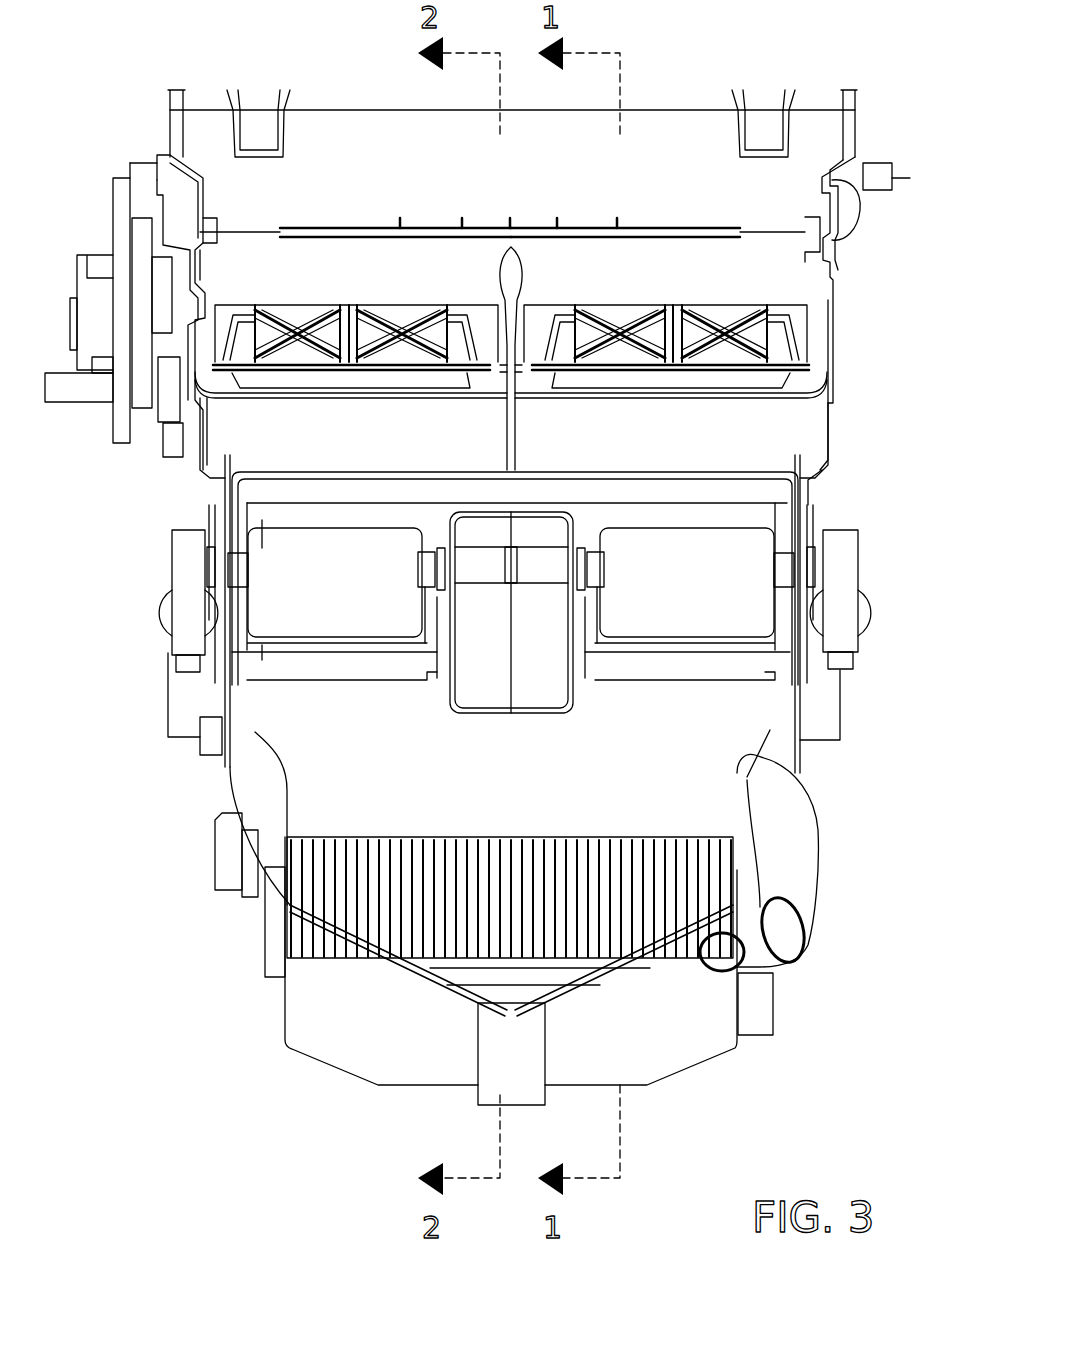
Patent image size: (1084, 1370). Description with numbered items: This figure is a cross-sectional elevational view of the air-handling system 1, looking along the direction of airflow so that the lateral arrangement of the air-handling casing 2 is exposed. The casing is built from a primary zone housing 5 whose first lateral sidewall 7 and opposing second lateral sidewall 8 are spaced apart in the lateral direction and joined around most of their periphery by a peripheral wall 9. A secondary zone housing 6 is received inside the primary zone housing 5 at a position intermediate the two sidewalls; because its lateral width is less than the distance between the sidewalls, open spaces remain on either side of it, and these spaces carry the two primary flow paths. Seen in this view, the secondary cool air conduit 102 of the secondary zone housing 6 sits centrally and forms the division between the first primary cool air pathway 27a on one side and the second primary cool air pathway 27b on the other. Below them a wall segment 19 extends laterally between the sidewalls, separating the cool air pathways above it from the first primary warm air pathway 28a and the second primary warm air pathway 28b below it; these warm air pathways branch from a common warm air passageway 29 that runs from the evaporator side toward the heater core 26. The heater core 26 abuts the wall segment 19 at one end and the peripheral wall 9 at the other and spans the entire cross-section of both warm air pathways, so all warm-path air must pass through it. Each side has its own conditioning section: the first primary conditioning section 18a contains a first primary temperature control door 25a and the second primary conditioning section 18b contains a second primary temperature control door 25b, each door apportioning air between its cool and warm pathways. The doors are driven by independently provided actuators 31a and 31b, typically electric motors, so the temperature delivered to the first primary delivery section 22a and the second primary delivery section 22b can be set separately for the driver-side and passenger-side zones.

The air-handling system 1 is at (118, 42).
The air-handling casing 2 is at (700, 100).
The primary zone housing 5 is at (835, 298).
The secondary zone housing 6 is at (540, 512).
The first lateral sidewall 7 is at (800, 528).
The second lateral sidewall 8 is at (228, 527).
The peripheral wall 9 is at (428, 1087).
The wall segment 19 is at (713, 755).
The first primary delivery section 22a is at (740, 268).
The second primary delivery section 22b is at (232, 300).
The first primary temperature control door 25a is at (707, 642).
The second primary temperature control door 25b is at (250, 632).
The first primary cool air pathway 27a is at (742, 617).
The second primary cool air pathway 27b is at (313, 640).
The first primary conditioning section 18a is at (775, 630).
The second primary conditioning section 18b is at (250, 620).
The heater core 26 is at (623, 935).
The first primary warm air pathway 28a is at (668, 852).
The second primary warm air pathway 28b is at (363, 850).
The common warm air passageway 29 is at (427, 935).
The actuator 31a is at (850, 558).
The actuator 31b is at (185, 560).
The secondary cool air conduit 102 is at (487, 512).